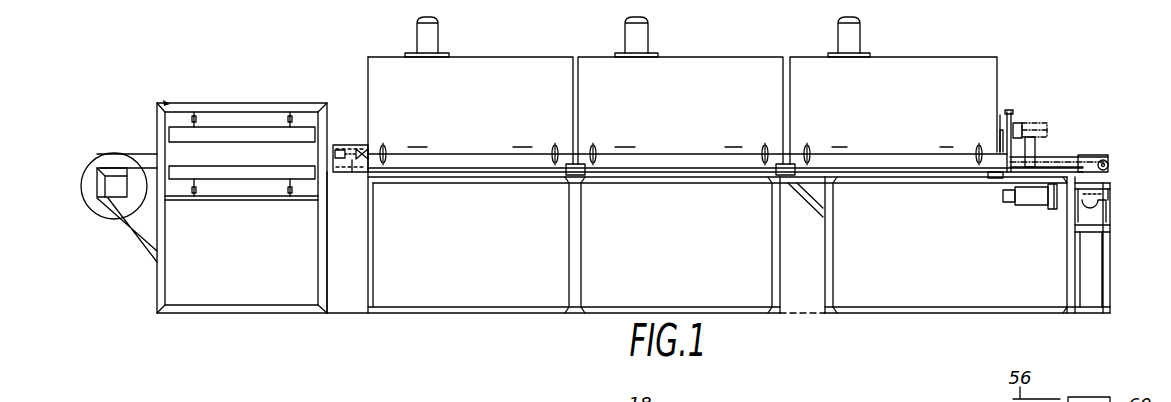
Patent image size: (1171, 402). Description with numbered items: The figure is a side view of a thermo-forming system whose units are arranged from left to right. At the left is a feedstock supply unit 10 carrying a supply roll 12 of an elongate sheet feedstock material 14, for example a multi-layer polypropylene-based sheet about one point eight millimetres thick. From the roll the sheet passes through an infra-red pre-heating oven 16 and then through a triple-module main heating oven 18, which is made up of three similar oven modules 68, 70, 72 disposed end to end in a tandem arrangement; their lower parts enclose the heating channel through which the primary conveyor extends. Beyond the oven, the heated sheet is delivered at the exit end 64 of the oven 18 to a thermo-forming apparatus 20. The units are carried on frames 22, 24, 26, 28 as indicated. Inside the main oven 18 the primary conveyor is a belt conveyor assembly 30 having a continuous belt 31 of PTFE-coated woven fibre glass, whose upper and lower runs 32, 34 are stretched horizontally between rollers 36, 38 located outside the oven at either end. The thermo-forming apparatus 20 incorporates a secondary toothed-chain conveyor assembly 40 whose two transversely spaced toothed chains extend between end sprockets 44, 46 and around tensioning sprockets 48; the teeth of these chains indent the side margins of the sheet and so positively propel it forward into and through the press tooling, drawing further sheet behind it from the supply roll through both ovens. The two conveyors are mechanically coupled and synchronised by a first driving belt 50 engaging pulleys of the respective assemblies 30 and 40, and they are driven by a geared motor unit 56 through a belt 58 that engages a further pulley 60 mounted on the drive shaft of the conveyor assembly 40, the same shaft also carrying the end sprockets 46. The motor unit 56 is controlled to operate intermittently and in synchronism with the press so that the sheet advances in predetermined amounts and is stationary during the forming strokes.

The feedstock supply unit 10 is at (126, 248).
The supply roll 12 is at (91, 218).
The sheet feedstock material 14 is at (139, 152).
The pre-heating oven 16 is at (257, 99).
The main heating oven 18 is at (555, 321).
The thermo-forming apparatus 20 is at (1092, 141).
The frame 22 is at (330, 268).
The frame 24 is at (365, 268).
The frame 26 is at (782, 261).
The frame 28 is at (820, 273).
The belt conveyor assembly 30 is at (349, 141).
The continuous belt 31 is at (477, 146).
The upper run 32 is at (363, 142).
The lower run 34 is at (354, 172).
The roller 36 is at (335, 156).
The roller 38 is at (1013, 147).
The toothed-chain conveyor assembly 40 is at (1052, 158).
The end sprocket 44 is at (1030, 155).
The end sprocket 46 is at (1110, 161).
The tensioning sprocket 48 is at (1068, 177).
The first driving belt 50 is at (995, 180).
The geared motor unit 56 is at (1033, 208).
The belt 58 is at (1108, 203).
The pulley 60 is at (1108, 177).
The exit end 64 is at (998, 150).
The oven module 68 is at (523, 57).
The oven module 70 is at (712, 57).
The oven module 72 is at (913, 57).